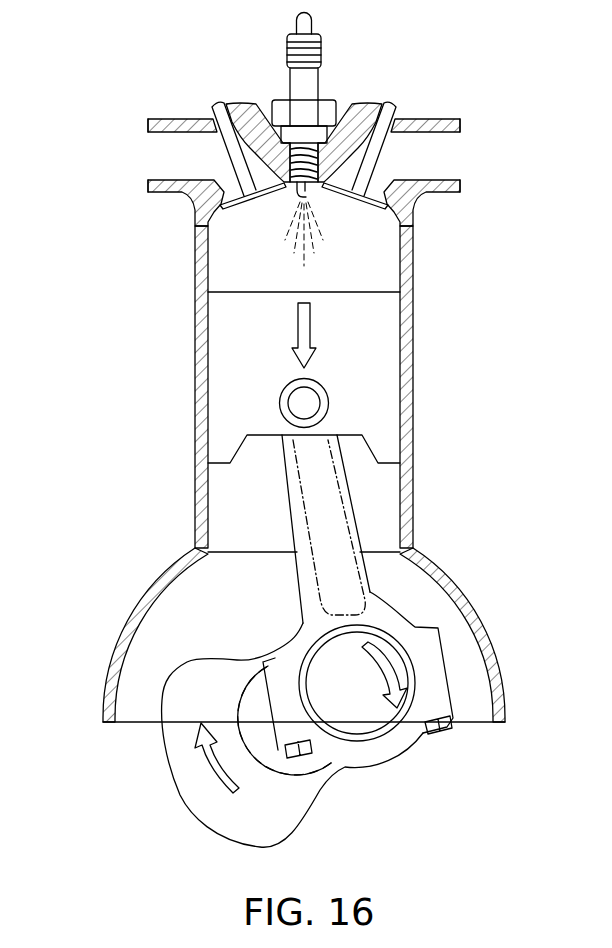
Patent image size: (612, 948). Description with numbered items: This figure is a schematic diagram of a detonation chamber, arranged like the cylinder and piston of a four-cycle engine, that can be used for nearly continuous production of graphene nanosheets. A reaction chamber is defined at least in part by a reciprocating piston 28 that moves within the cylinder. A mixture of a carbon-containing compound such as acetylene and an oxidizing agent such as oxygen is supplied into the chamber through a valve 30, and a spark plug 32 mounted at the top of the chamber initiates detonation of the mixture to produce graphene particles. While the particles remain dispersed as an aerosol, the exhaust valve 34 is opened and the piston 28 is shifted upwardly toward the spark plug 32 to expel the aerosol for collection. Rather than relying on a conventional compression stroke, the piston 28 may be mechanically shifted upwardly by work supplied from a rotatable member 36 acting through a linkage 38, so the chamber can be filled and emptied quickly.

The reciprocating piston 28 is at (392, 393).
The valve 30 is at (207, 233).
The spark plug 32 is at (312, 182).
The exhaust valve 34 is at (401, 234).
The rotatable member 36 is at (177, 697).
The linkage 38 is at (347, 497).